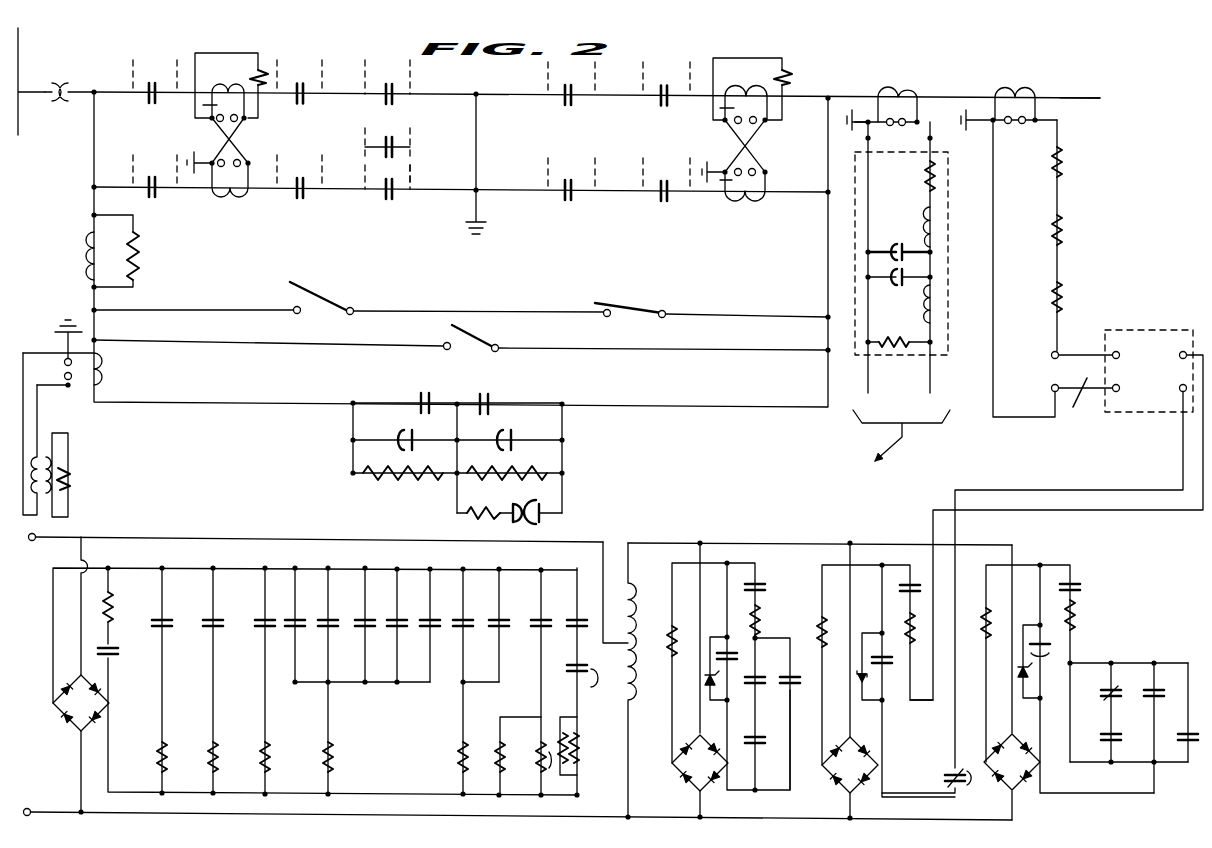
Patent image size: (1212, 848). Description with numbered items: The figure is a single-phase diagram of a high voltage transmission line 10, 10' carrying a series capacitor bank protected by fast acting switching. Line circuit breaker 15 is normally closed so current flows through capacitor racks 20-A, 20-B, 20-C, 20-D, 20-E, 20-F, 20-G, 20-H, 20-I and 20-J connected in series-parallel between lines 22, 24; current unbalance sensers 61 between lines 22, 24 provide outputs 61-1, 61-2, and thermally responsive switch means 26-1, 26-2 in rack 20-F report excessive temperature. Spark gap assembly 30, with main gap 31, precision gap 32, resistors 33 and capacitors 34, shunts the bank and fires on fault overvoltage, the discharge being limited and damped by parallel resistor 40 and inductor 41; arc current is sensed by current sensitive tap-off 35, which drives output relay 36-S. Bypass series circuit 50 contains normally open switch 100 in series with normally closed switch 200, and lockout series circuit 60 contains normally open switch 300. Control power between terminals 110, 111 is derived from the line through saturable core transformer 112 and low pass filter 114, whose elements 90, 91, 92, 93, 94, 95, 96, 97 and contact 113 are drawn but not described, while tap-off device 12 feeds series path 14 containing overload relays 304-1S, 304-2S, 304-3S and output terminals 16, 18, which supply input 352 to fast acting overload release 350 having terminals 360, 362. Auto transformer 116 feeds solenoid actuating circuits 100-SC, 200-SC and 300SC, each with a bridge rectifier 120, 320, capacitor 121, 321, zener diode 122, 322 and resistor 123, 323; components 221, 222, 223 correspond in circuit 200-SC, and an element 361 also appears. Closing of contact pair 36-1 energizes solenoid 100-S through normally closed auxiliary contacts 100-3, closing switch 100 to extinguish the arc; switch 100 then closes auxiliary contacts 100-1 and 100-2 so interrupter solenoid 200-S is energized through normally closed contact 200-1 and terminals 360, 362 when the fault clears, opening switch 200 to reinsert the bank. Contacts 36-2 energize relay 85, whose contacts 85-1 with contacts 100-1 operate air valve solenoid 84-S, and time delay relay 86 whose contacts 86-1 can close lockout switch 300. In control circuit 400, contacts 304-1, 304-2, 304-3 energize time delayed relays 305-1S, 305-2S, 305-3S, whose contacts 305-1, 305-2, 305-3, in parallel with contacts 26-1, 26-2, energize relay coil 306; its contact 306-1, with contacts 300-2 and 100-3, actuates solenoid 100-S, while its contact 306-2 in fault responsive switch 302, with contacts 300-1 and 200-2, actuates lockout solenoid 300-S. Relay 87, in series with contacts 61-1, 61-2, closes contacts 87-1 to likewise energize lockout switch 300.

The main transmission line 10 is at (32, 81).
The main transmission line circuit breaker 15 is at (63, 78).
The capacitor bank line 22 is at (513, 84).
The capacitor bank line 24 is at (510, 188).
The capacitor rack 20-I is at (146, 98).
The capacitor rack 20-G is at (299, 98).
The capacitor rack 20-E is at (396, 114).
The capacitor rack 20-C is at (571, 99).
The capacitor rack 20-A is at (662, 99).
The capacitor rack 20-J is at (155, 190).
The capacitor rack 20-H is at (297, 191).
The capacitor rack 20-F is at (387, 196).
The capacitor rack 20-D is at (567, 193).
The capacitor rack 20-B is at (665, 193).
The thermally responsive switch contact 26-1 is at (410, 148).
The thermally responsive switch contact 26-2 is at (410, 180).
The current unbalance senser 61 is at (217, 141).
The current unbalance senser output contact 61-2 is at (790, 74).
The current unbalance senser output contact 61-1 is at (476, 681).
The saturable core transformer 112 is at (918, 98).
The relay contacts 113 is at (891, 127).
The capacitor 91 is at (866, 139).
The capacitor 90 is at (935, 138).
The resistor 92 is at (942, 178).
The low pass filter 114 is at (925, 223).
The inductor 94 is at (936, 229).
The capacitor 96 is at (895, 250).
The capacitor 97 is at (899, 289).
The inductor 95 is at (936, 305).
The resistor 93 is at (900, 350).
The energizing source terminal 111 is at (31, 806).
The energizing source terminal 110 is at (482, 461).
The tap-off device 12 is at (1025, 108).
The main transmission line 10' is at (1094, 82).
The series path 14 is at (1033, 193).
The resistor 304-1S is at (1065, 160).
The resistor 304-2S is at (1065, 230).
The resistor 304-3S is at (1066, 299).
The output terminal 16 is at (1050, 357).
The output terminal 18 is at (1050, 390).
The overload release input 352 is at (1076, 408).
The fast acting overload release 350 is at (1142, 329).
The overload release terminal 360 is at (1179, 357).
The overload release terminal 362 is at (1179, 390).
The auxiliary contacts 100-2 is at (972, 793).
The bypass disconnect switch 100 is at (333, 284).
The bypass series circuit 50 is at (548, 303).
The interrupter switch 200 is at (629, 318).
The lockout series circuit 60 is at (199, 345).
The lockout disconnect switch 300 is at (480, 333).
The spark gap assembly 30 is at (575, 435).
The main gap 31 is at (476, 397).
The capacitors 34 is at (403, 433).
The resistors 33 is at (417, 464).
The precision gap 32 is at (511, 522).
The current sensitive tap-off 35 is at (66, 357).
The output relay 36-S is at (86, 481).
The inductor 41 is at (90, 250).
The resistor 40 is at (147, 262).
The control circuit arrangement 400 is at (340, 560).
The overload relay 304-3 is at (180, 681).
The time delayed relay 305-3S is at (186, 757).
The overload relay 304-1 is at (233, 681).
The time delayed relay 305-1S is at (237, 757).
The overload relay 304-2 is at (275, 681).
The time delayed relay 305-2S is at (290, 757).
The time delayed relay contacts 305-3 is at (305, 625).
The time delayed relay contacts 305-1 is at (342, 681).
The relay coil 306 is at (337, 769).
The time delayed relay contacts 305-2 is at (377, 625).
The unbalance relay 87 is at (452, 763).
The arc current sensing contacts 36-2 is at (555, 681).
The relay 85 is at (518, 755).
The time delay relay 86 is at (551, 766).
The relay contacts 85-1 is at (572, 632).
The auxiliary contacts 100-1 is at (596, 690).
The air valve actuating solenoid 84-S is at (580, 768).
The auto transformer 116 is at (634, 641).
The resistor 123 is at (667, 642).
The solenoid actuating circuit 100-SC is at (765, 558).
The bridge rectifier 120 is at (690, 790).
The zener diode 122 is at (707, 690).
The capacitor 121 is at (734, 666).
The auxiliary contact 100-3 is at (763, 589).
The actuating solenoid 100-S is at (762, 620).
The auxiliary contact 300-2 is at (764, 684).
The relay contact 306-1 is at (774, 746).
The capacitor 361 is at (798, 676).
The contact pair 36-1 is at (767, 787).
The resistor 223 is at (818, 631).
The solenoid actuating circuit 200-SC is at (896, 520).
The auxiliary contact 200-1 is at (924, 566).
The interrupter solenoid 200-S is at (906, 628).
The capacitor 221 is at (894, 651).
The zener diode 222 is at (870, 688).
The solenoid actuating circuit 300SC is at (1056, 560).
The bridge rectifier 320 is at (1023, 791).
The resistor 323 is at (978, 646).
The zener diode 322 is at (1032, 678).
The capacitor 321 is at (1052, 644).
The auxiliary contact 300-1 is at (1082, 589).
The lockout solenoid 300-S is at (1080, 615).
The fault responsive switch 302 is at (1149, 620).
The auxiliary contact 200-2 is at (1131, 712).
The relay contact 306-2 is at (1131, 729).
The time delay relay contacts 86-1 is at (1169, 728).
The relay contacts 87-1 is at (1178, 712).